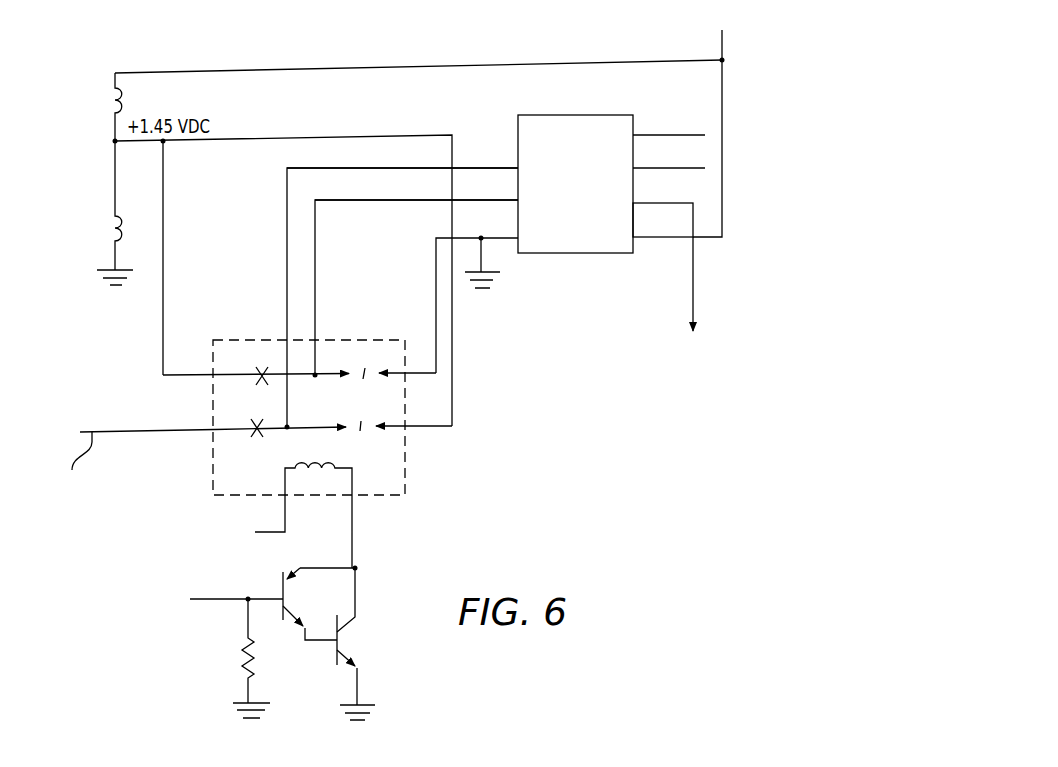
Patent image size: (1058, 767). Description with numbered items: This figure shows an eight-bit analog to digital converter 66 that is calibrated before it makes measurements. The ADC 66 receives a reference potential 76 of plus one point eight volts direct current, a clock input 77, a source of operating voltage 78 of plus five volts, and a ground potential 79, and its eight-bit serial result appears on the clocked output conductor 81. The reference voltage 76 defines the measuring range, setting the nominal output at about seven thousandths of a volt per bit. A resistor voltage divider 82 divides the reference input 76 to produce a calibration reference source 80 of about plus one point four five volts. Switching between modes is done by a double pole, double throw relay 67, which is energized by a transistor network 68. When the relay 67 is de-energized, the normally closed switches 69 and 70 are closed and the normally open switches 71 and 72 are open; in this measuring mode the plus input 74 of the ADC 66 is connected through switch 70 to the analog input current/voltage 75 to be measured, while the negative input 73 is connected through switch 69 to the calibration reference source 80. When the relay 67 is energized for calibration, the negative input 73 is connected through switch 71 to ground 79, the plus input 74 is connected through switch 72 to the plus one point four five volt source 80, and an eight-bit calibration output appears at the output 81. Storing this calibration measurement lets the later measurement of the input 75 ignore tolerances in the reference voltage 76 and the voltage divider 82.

The 8-bit analog to digital converter 66 is at (547, 253).
The double pole, double throw relay 67 is at (405, 475).
The transistor network 68 is at (335, 600).
The normally closed switch 69 is at (262, 383).
The normally closed switch 70 is at (258, 436).
The normally open switch 71 is at (365, 374).
The normally open switch 72 is at (361, 421).
The negative input 73 is at (455, 202).
The plus input 74 is at (487, 166).
The ADC analog input current/voltage 75 is at (141, 431).
The reference voltage 76 is at (722, 215).
The clock input 77 is at (655, 170).
The source of operating voltage 78 is at (645, 135).
The ground potential 79 is at (481, 258).
The calibration reference source 80 is at (133, 143).
The clocked output conductor 81 is at (695, 287).
The voltage divider 82 is at (106, 171).